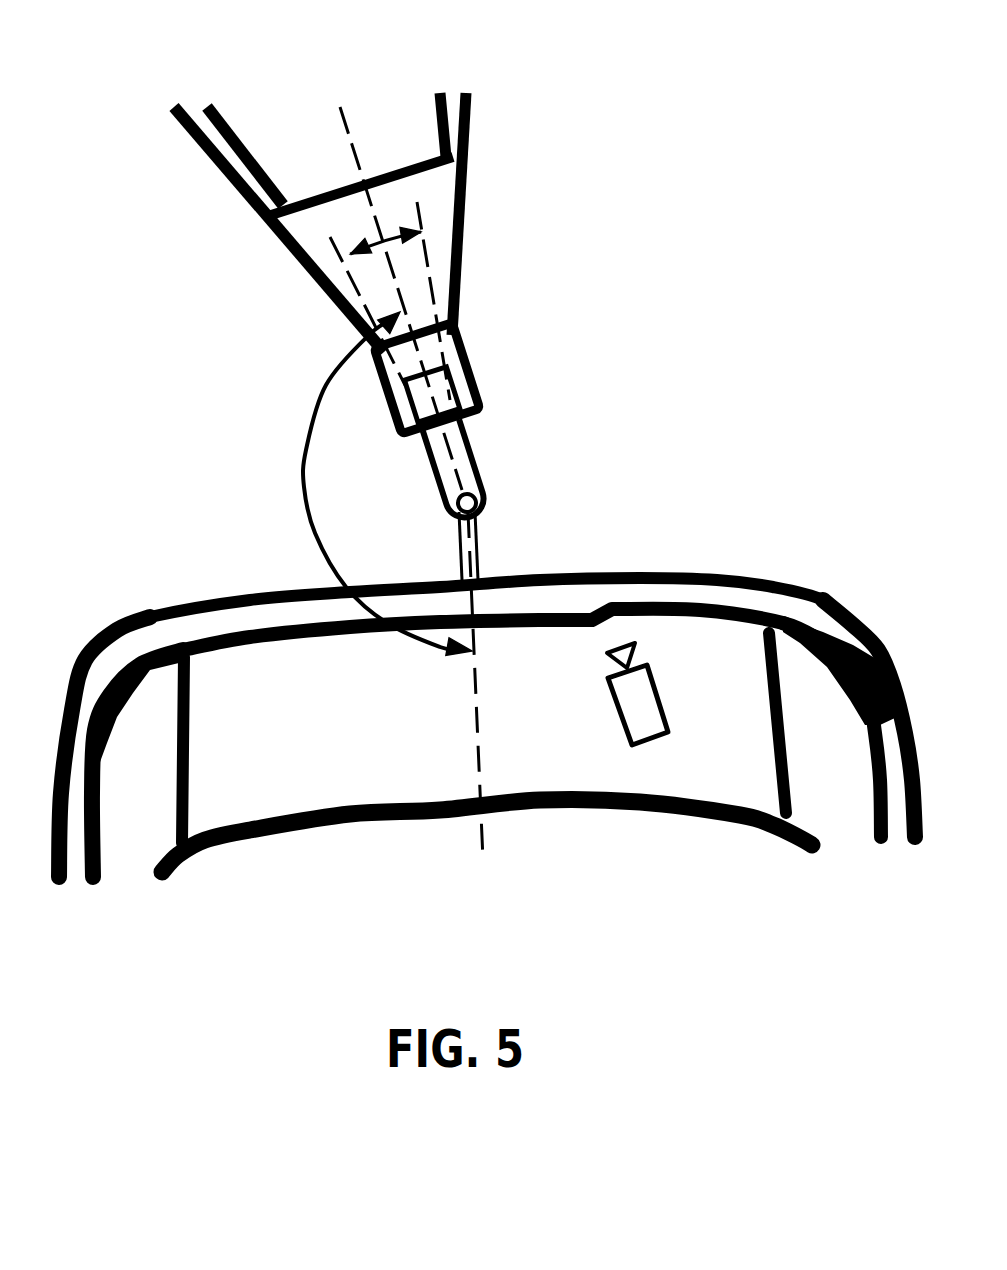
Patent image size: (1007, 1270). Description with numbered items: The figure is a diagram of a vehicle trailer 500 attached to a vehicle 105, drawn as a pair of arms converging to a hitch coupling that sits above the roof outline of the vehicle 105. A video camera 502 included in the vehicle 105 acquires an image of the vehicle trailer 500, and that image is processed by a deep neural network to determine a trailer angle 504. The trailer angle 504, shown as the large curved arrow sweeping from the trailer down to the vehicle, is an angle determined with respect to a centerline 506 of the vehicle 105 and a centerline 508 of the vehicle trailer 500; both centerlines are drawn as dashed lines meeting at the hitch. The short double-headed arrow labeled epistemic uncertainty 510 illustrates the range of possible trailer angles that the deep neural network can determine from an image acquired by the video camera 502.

The vehicle trailer 500 is at (463, 262).
The centerline of the vehicle trailer 508 is at (340, 116).
The epistemic uncertainty 510 is at (356, 231).
The trailer angle 504 is at (323, 397).
The centerline of the vehicle 506 is at (478, 777).
The vehicle 105 is at (717, 580).
The video camera 502 is at (658, 697).